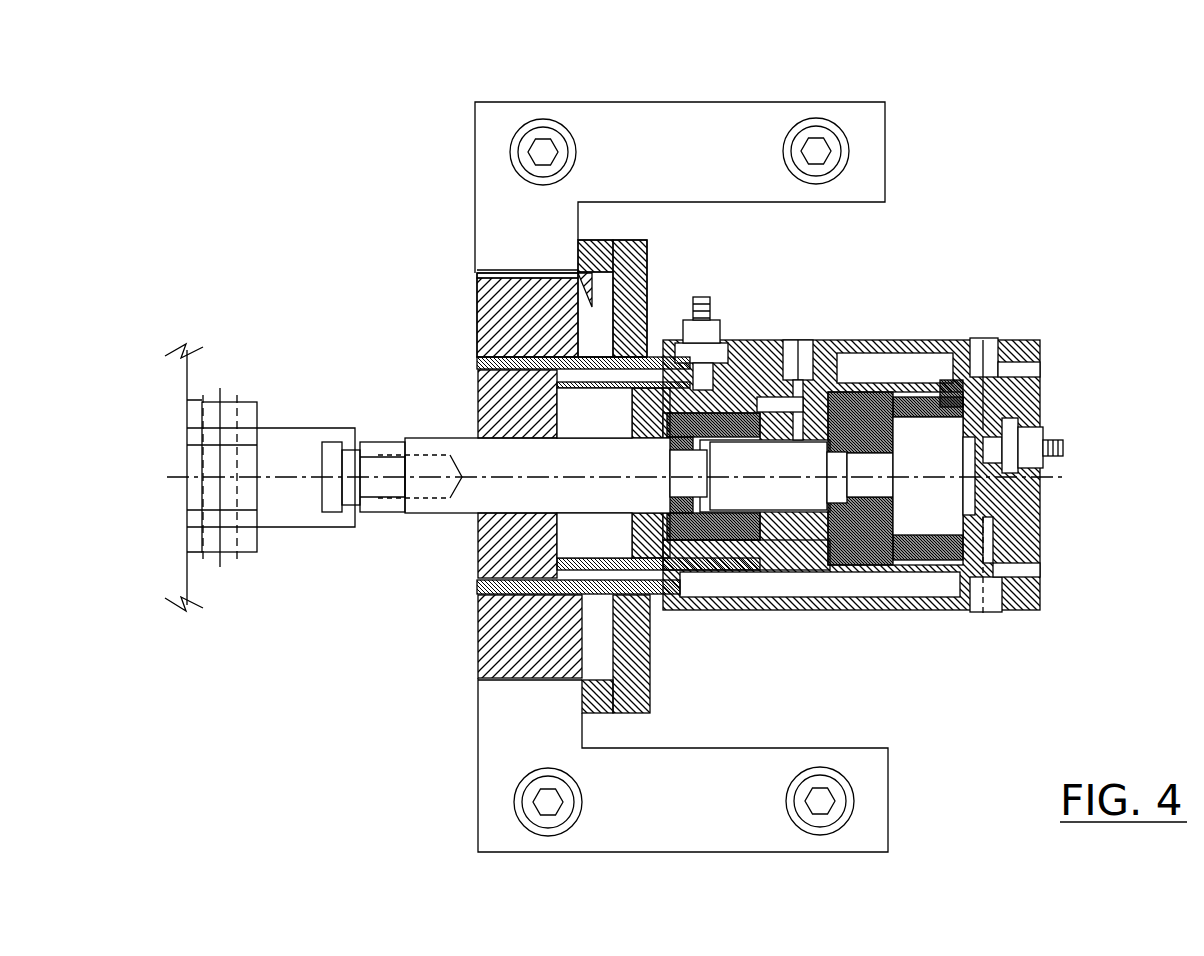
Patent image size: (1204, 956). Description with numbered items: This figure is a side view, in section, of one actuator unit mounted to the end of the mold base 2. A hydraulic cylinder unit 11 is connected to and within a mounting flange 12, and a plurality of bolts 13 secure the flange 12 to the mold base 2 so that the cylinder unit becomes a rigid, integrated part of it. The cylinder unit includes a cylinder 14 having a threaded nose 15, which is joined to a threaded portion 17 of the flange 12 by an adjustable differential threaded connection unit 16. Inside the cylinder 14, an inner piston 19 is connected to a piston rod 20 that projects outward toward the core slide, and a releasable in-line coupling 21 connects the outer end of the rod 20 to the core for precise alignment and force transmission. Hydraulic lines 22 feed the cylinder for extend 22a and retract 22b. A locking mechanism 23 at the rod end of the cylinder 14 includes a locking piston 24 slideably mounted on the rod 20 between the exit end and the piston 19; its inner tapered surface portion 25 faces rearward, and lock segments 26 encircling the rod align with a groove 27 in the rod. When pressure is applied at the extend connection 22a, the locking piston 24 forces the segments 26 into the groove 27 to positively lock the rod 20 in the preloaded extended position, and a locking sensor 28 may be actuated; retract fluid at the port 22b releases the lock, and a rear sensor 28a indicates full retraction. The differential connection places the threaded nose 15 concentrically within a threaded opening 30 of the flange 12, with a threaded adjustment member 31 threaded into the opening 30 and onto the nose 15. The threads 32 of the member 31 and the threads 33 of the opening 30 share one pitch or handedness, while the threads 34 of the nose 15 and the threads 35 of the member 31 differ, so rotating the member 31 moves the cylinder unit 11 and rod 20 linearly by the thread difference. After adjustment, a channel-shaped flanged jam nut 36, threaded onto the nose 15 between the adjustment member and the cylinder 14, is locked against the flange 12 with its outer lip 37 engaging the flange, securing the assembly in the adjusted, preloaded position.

The mold base 2 is at (412, 566).
The hydraulic cylinder unit 11 is at (820, 611).
The mounting flange 12 is at (876, 176).
The bolts 13 is at (832, 146).
The cylinder 14 is at (883, 562).
The threaded nose 15 is at (482, 571).
The adjustable differential threaded connection unit 16 is at (478, 655).
The threaded portion 17 is at (480, 268).
The inner piston 19 is at (891, 522).
The piston rod 20 is at (422, 438).
The releasable coupling 21 is at (372, 514).
The hydraulic lines 22 is at (795, 340).
The extend port 22a is at (1042, 575).
The retract port 22b is at (803, 340).
The locking mechanism 23 is at (668, 445).
The locking piston 24 is at (633, 530).
The inner tapered surface portion 25 is at (732, 548).
The lock segments 26 is at (706, 512).
The groove 27 is at (670, 487).
The locking sensor 28 is at (720, 320).
The rear sensor 28a is at (1063, 452).
The threaded opening 30 is at (513, 273).
The threaded adjustment member 31 is at (477, 322).
The threads 32 is at (478, 285).
The threads 33 is at (594, 307).
The threads 34 is at (478, 358).
The threads 35 is at (478, 375).
The flanged jam nut 36 is at (647, 274).
The outer lip 37 is at (630, 240).